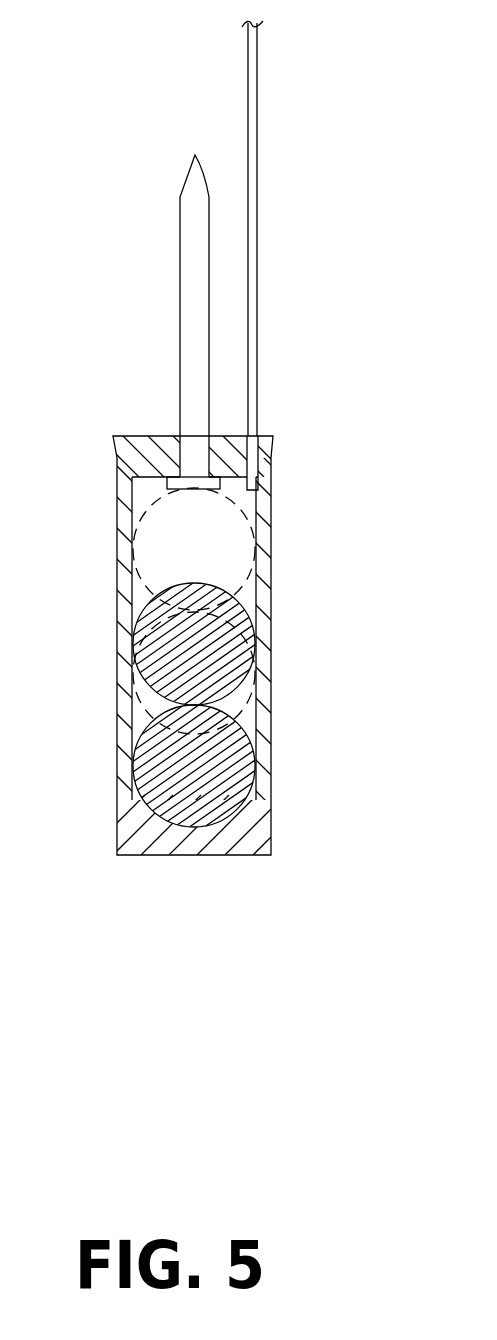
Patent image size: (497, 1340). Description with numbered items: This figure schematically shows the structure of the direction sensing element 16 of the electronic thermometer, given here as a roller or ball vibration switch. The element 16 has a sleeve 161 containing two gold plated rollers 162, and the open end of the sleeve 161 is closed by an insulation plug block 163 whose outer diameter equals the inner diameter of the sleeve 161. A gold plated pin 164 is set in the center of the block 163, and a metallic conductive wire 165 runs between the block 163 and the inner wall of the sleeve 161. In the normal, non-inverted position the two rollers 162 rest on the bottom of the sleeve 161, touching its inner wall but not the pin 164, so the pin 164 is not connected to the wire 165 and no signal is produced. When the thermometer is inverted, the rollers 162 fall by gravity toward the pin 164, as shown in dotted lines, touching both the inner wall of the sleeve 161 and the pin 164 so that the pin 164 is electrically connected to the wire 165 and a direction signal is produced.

The direction sensing element 16 is at (76, 412).
The sleeve 161 is at (271, 687).
The gold plated rollers 162 is at (121, 693).
The insulation plug block 163 is at (155, 436).
The gold plated pin 164 is at (180, 259).
The metallic conductive wire 165 is at (258, 300).